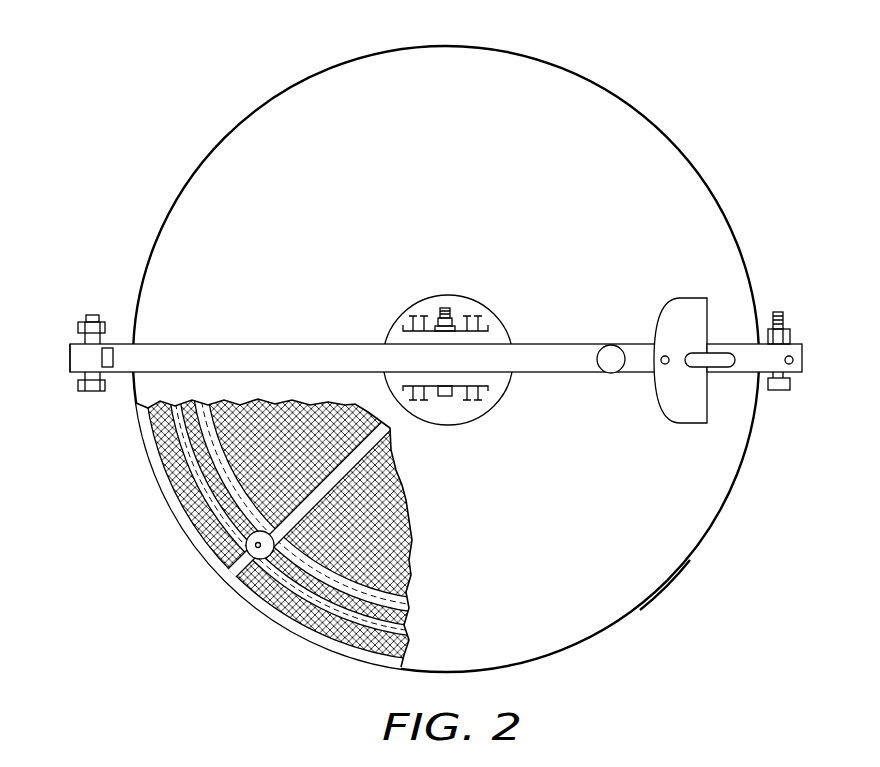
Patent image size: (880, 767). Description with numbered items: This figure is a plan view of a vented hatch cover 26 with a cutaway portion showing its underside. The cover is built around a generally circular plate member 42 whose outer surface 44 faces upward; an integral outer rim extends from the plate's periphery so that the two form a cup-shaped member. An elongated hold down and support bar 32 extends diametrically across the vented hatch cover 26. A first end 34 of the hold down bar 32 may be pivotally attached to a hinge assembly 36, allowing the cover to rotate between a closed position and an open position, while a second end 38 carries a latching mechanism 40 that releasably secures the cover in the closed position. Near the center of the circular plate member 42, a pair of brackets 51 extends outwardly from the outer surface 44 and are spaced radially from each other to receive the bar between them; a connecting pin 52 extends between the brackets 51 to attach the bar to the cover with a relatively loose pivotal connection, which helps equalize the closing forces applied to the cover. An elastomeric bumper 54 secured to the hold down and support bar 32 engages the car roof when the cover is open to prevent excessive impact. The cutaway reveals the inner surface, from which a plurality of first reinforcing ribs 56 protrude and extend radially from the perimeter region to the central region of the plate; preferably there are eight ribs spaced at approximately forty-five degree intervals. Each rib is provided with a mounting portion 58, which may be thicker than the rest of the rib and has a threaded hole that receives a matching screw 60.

The vented hatch cover 26 is at (360, 57).
The hold down and support bar 32 is at (212, 344).
The first end 34 is at (70, 355).
The hinge assembly 36 is at (92, 315).
The second end 38 is at (803, 366).
The latching mechanism 40 is at (712, 305).
The circular plate member 42 is at (682, 542).
The outer surface 44 is at (550, 548).
The brackets 51 is at (488, 329).
The connecting pin 52 is at (445, 308).
The elastomeric bumper 54 is at (611, 345).
The first reinforcing ribs 56 is at (366, 448).
The mounting portion 58 is at (277, 562).
The screw 60 is at (222, 572).